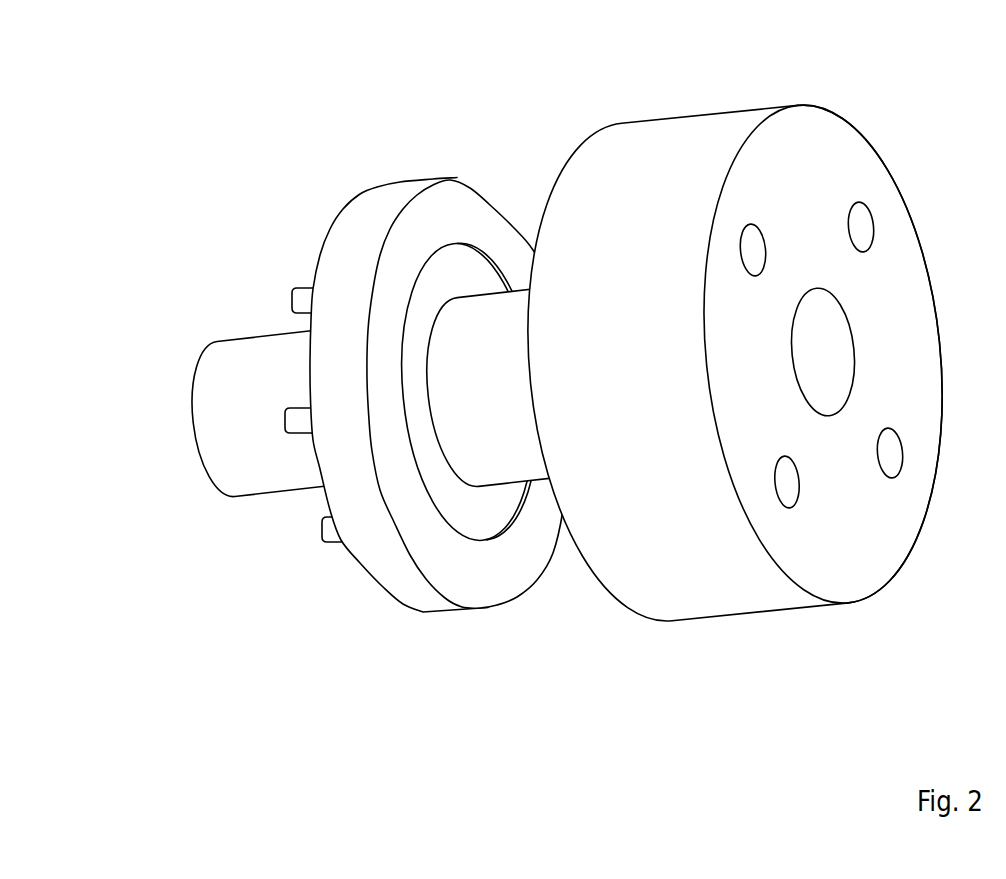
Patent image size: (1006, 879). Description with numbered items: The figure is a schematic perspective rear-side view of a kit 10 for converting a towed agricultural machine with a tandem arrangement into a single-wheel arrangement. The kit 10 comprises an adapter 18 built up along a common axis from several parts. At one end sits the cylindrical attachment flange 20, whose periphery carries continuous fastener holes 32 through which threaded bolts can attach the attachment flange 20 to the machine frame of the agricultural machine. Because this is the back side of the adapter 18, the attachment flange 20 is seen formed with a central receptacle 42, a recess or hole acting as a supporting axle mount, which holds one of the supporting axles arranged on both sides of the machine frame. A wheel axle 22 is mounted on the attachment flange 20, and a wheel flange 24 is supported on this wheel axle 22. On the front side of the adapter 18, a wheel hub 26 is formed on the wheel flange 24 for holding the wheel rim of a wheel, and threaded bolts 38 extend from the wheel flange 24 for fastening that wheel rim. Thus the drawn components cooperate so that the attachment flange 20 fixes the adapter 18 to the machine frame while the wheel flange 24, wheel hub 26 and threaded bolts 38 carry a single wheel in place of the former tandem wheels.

The kit 10 is at (157, 127).
The adapter 18 is at (554, 624).
The attachment flange 20 is at (668, 167).
The wheel axle 22 is at (476, 354).
The wheel flange 24 is at (344, 258).
The wheel hub 26 is at (229, 358).
The fastener holes 32 is at (755, 250).
The threaded bolts 38 is at (298, 304).
The central receptacle 42 is at (827, 355).